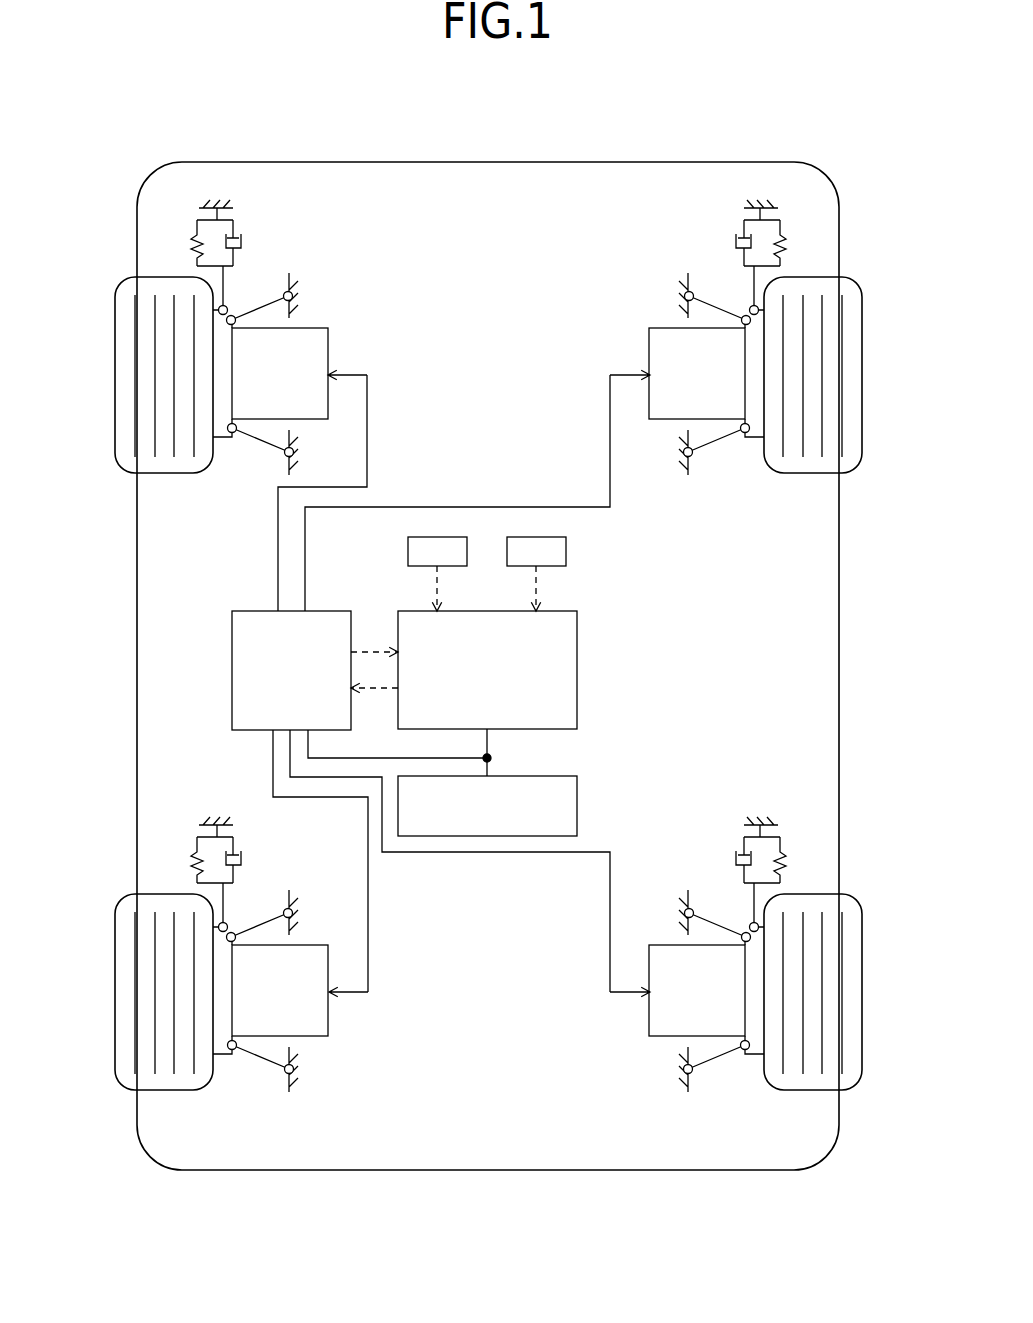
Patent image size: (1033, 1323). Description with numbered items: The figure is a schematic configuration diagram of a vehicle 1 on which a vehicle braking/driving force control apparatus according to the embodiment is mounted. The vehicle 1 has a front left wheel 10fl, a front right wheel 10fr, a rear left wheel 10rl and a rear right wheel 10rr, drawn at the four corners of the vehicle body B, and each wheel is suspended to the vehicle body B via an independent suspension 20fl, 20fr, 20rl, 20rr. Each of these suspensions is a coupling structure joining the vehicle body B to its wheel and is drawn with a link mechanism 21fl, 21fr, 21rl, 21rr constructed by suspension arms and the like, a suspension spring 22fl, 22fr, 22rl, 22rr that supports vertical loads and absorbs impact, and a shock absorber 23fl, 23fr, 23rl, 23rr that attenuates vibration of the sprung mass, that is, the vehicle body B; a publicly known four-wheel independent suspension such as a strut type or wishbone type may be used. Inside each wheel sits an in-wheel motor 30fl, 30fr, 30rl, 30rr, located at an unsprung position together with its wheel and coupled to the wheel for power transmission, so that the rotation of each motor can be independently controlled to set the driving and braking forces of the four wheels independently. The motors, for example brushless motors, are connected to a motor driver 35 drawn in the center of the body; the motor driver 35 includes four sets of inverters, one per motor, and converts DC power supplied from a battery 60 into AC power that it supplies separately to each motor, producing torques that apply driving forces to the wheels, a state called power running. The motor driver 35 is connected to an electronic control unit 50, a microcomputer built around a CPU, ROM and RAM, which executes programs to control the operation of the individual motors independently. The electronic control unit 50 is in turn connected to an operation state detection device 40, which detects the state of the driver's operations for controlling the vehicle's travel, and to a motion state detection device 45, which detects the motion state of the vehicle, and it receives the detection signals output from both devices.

The vehicle 1 is at (889, 239).
The vehicle body B is at (839, 671).
The front left wheel 10fl is at (115, 337).
The front right wheel 10fr is at (862, 330).
The rear left wheel 10rl is at (115, 983).
The rear right wheel 10rr is at (862, 958).
The suspension 20fl is at (269, 323).
The suspension 20fr is at (700, 322).
The suspension 20rl is at (234, 895).
The suspension 20rr is at (746, 898).
The link mechanism 21fl is at (267, 304).
The link mechanism 21fr is at (712, 303).
The link mechanism 21rl is at (265, 920).
The link mechanism 21rr is at (713, 920).
The suspension spring 22fl is at (196, 230).
The suspension spring 22fr is at (782, 230).
The suspension spring 22rl is at (196, 843).
The suspension spring 22rr is at (785, 845).
The shock absorber 23fl is at (244, 238).
The shock absorber 23fr is at (733, 238).
The shock absorber 23rl is at (244, 855).
The shock absorber 23rr is at (735, 855).
The motor 30fl is at (328, 342).
The motor 30fr is at (649, 342).
The motor 30rl is at (329, 1023).
The motor 30rr is at (649, 1023).
The motor driver 35 is at (232, 667).
The operation state detection device 40 is at (408, 552).
The motion state detection device 45 is at (566, 552).
The electronic control unit 50 is at (543, 729).
The battery 60 is at (577, 806).